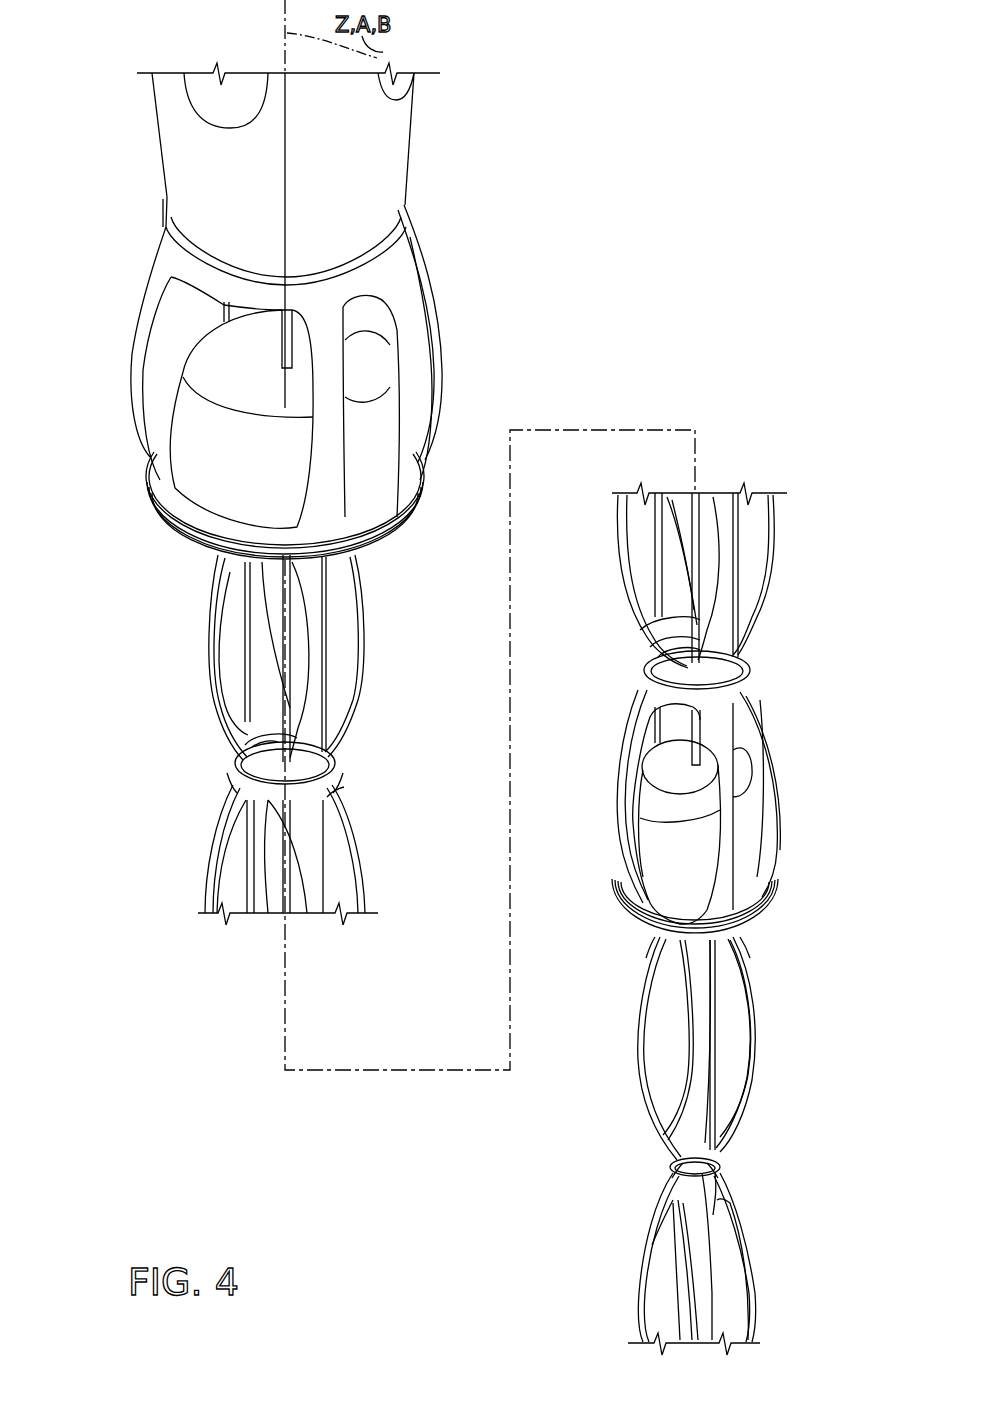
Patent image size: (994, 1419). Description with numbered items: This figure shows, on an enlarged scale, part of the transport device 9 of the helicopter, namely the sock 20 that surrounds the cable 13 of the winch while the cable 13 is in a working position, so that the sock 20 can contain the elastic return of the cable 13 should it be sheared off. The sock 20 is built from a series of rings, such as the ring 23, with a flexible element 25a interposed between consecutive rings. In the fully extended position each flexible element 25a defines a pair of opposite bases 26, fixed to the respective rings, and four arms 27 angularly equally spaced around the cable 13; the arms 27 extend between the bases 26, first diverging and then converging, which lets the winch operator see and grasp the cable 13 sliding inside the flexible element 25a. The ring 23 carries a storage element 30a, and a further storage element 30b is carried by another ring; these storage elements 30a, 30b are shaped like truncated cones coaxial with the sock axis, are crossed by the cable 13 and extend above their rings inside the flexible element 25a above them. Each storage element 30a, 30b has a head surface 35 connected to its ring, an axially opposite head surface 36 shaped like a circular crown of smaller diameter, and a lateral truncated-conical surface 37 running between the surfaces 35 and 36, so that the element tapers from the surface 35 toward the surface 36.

The transport device 9 is at (455, 132).
The sock 20 is at (503, 287).
The ring 23 is at (410, 212).
The flexible element 25a is at (383, 571).
The base 26 is at (232, 790).
The arm 27 is at (245, 577).
The storage element 30a is at (200, 430).
The storage element 30b is at (667, 854).
The cable 13 is at (658, 617).
The head surface 35 is at (370, 520).
The head surface 36 is at (367, 357).
The lateral truncated-conical surface 37 is at (377, 424).